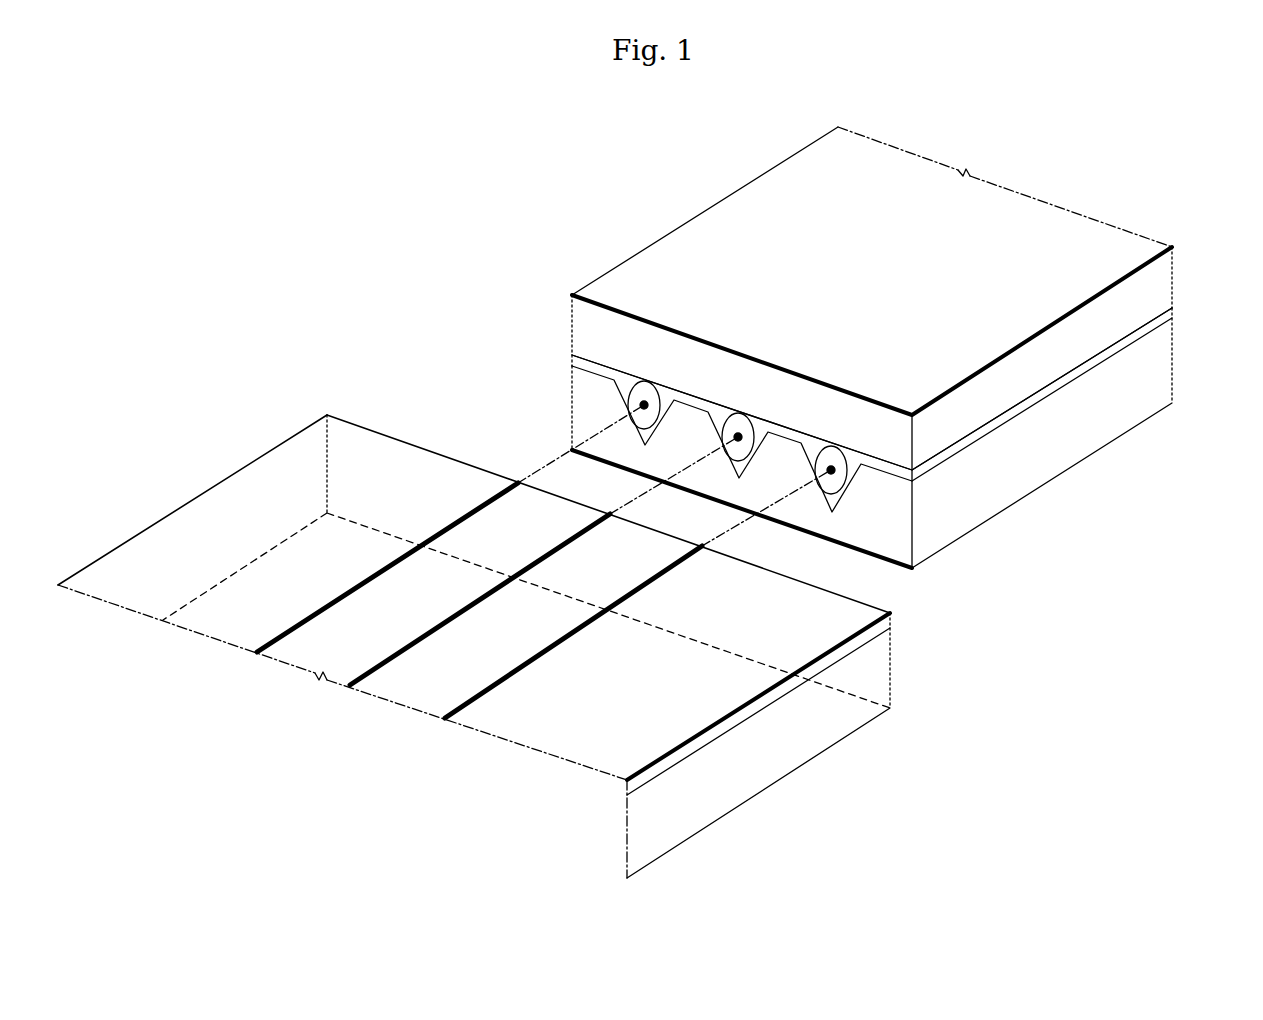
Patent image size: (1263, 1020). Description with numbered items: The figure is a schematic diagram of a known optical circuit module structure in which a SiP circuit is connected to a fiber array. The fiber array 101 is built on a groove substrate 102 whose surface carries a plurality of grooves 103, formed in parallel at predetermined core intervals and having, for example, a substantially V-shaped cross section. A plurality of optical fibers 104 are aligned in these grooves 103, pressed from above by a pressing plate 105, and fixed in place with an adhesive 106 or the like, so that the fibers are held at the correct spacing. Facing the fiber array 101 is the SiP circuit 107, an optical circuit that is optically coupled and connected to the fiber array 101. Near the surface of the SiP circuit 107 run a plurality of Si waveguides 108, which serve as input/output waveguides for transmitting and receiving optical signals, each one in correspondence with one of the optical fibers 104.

The fiber array 101 is at (697, 186).
The groove substrate 102 is at (1172, 373).
The grooves 103 is at (838, 507).
The optical fibers 104 is at (645, 381).
The pressing plate 105 is at (1172, 276).
The adhesive 106 is at (1172, 312).
The SiP circuit 107 is at (785, 778).
The Si waveguides 108 is at (437, 533).